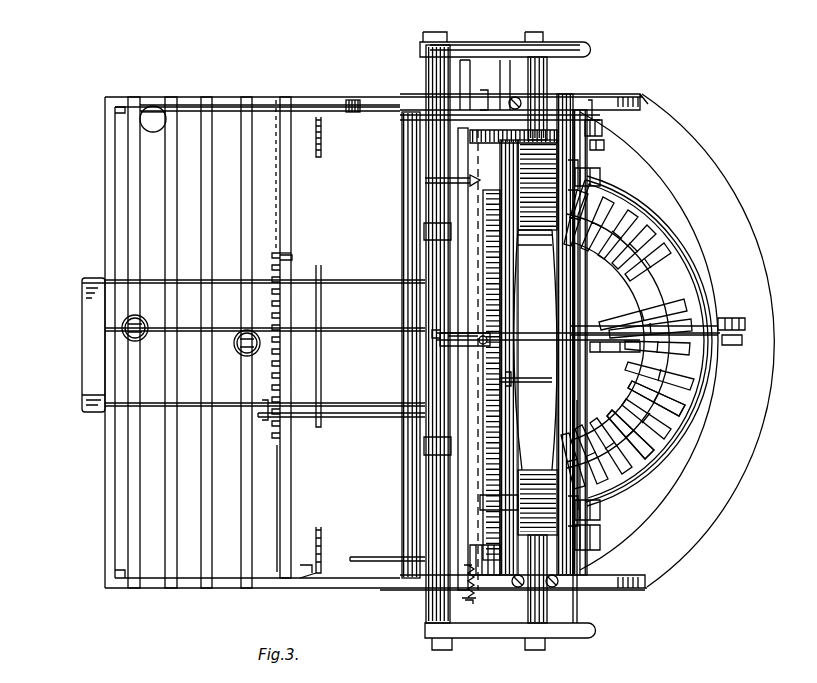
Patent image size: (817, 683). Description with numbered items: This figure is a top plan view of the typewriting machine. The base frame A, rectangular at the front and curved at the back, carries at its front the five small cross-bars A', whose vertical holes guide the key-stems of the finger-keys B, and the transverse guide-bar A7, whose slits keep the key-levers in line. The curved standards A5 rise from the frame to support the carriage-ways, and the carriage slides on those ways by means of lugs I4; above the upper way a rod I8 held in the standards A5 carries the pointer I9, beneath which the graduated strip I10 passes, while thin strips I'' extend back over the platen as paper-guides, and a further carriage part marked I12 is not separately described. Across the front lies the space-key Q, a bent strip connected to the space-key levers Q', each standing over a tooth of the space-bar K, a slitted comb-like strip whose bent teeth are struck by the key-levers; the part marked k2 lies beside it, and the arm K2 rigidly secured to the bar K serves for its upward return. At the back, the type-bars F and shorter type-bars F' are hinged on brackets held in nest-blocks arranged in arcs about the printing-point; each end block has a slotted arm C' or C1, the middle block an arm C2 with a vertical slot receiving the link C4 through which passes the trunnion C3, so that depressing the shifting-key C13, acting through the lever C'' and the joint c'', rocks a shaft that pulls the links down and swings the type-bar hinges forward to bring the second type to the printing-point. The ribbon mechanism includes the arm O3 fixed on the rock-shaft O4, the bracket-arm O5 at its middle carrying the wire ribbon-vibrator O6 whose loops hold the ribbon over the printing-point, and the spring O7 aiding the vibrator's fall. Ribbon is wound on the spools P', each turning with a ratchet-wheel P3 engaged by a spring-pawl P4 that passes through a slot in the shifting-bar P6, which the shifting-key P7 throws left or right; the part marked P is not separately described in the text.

The frame A is at (429, 341).
The cross-bars A' is at (211, 341).
The curved standards A5 is at (482, 650).
The transverse guide-bar A7 is at (322, 545).
The finger-keys B is at (242, 354).
The arm C' is at (709, 384).
The lever C'' is at (270, 80).
The joint c'' is at (355, 92).
The arm C1 is at (675, 462).
The arm C2 is at (695, 410).
The trunnion C3 is at (705, 374).
The link C4 is at (700, 396).
The shifting-key C13 is at (157, 107).
The type-bar F is at (591, 314).
The type-bar F' is at (615, 352).
The paper-guide strips I'' is at (393, 345).
The lugs I4 is at (424, 448).
The rod I8 is at (455, 616).
The pointer I9 is at (440, 345).
The graduated strip I10 is at (485, 400).
The rod I12 is at (382, 578).
The space-bar K is at (288, 243).
The rack tooth k2 is at (292, 262).
The arm K2 is at (349, 418).
The arm O3 is at (618, 186).
The rocking shaft O4 is at (652, 470).
The bracket-arm O5 is at (540, 383).
The ribbon-vibrating arm O6 is at (526, 270).
The spring O7 is at (603, 140).
The gear P is at (519, 489).
The spool P' is at (556, 345).
The ratchet-wheel P3 is at (600, 512).
The spring-pawl P4 is at (600, 130).
The shifting-bar P6 is at (608, 278).
The shifting-key P7 is at (578, 606).
The space-key Q is at (80, 345).
The space-key lever Q' is at (265, 341).